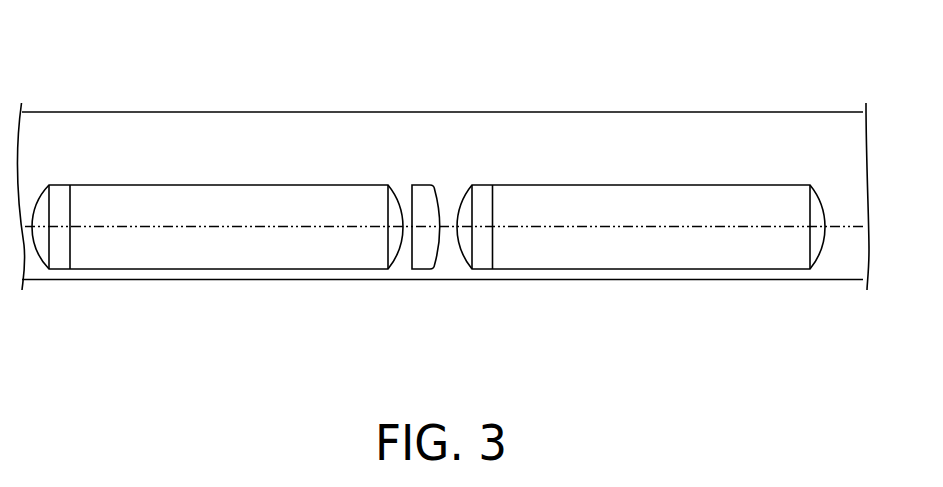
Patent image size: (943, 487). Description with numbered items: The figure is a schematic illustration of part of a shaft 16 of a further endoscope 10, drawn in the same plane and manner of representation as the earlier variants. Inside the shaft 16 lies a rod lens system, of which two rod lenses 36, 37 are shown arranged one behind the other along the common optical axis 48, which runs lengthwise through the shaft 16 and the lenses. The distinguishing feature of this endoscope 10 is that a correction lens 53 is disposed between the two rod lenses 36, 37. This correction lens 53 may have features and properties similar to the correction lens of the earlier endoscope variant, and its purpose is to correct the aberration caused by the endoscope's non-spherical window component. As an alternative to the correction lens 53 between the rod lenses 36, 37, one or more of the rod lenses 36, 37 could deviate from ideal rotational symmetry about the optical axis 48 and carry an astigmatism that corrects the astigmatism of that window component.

The endoscope 10 is at (443, 151).
The shaft 16 is at (560, 114).
The rod lens 36 is at (207, 266).
The rod lens 37 is at (630, 266).
The optical axis 48 is at (843, 227).
The correction lens 53 is at (420, 265).